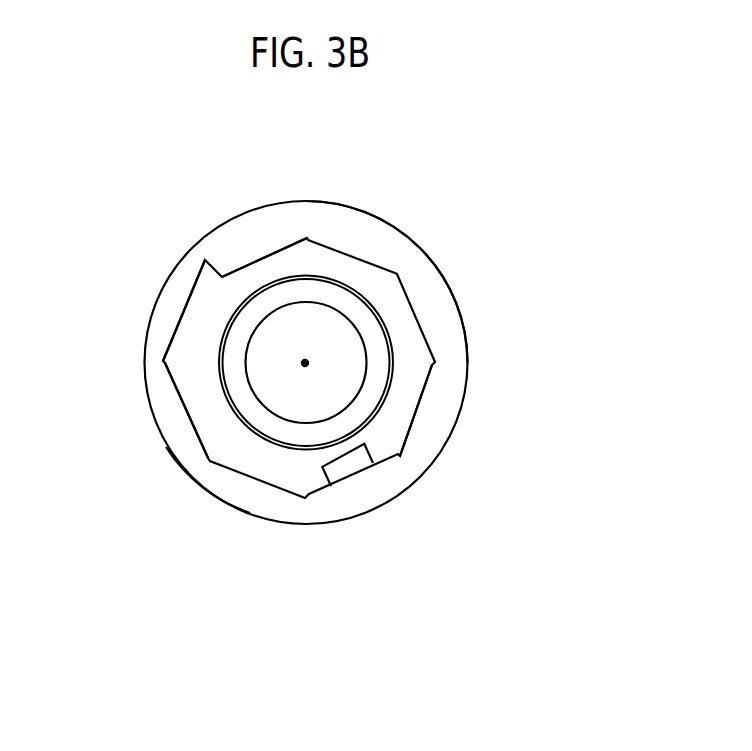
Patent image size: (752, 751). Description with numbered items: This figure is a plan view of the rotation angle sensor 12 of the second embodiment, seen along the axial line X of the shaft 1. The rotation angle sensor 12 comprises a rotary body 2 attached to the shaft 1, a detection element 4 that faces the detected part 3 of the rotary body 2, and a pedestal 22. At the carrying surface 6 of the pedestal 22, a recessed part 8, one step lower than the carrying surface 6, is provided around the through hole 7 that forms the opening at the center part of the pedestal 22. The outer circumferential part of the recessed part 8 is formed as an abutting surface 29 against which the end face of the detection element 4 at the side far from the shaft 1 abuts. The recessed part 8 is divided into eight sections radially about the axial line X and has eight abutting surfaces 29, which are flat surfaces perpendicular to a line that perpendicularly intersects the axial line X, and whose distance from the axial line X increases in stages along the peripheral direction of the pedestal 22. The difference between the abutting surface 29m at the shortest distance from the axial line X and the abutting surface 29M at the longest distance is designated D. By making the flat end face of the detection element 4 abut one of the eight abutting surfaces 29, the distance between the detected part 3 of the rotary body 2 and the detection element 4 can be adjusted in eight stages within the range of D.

The rotation angle sensor 12 is at (490, 214).
The pedestal 22 is at (461, 413).
The abutting surface 29 is at (272, 472).
The abutting surface with the shortest distance from the axial line 29m is at (258, 261).
The abutting surface with the longest distance from the axial line 29M is at (187, 303).
The detected part 3 is at (228, 396).
The rotary body 2 is at (237, 337).
The shaft 1 is at (349, 379).
The axial line X is at (307, 362).
The detection element 4 is at (355, 463).
The through hole 7 is at (240, 423).
The recessed part 8 is at (397, 422).
The carrying surface 6 is at (228, 487).